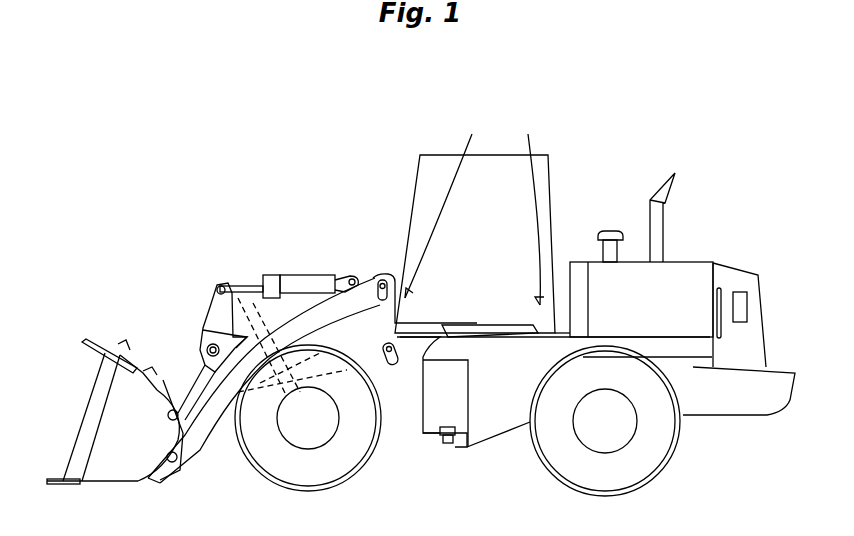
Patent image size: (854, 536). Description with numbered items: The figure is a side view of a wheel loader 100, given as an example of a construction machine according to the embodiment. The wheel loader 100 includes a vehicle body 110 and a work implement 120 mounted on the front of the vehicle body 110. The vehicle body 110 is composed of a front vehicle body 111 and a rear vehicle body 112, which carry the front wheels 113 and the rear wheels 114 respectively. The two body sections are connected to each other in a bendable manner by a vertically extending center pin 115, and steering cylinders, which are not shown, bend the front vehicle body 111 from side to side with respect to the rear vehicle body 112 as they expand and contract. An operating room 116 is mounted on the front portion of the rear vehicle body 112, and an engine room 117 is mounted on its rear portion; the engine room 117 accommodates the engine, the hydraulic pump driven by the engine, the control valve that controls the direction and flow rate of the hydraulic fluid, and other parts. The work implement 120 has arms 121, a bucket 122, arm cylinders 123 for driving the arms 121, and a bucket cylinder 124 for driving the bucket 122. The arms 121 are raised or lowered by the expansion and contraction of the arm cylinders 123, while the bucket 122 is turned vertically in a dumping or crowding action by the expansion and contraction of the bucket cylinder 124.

The wheel loader 100 is at (727, 157).
The vehicle body 110 is at (478, 188).
The front vehicle body 111 is at (450, 204).
The rear vehicle body 112 is at (533, 208).
The front wheels 113 is at (248, 468).
The rear wheels 114 is at (668, 463).
The center pin 115 is at (450, 444).
The operating room 116 is at (555, 196).
The engine room 117 is at (745, 267).
The work implement 120 is at (199, 352).
The arms 121 is at (295, 322).
The bucket 122 is at (83, 425).
The arm cylinders 123 is at (244, 293).
The bucket cylinder 124 is at (325, 276).